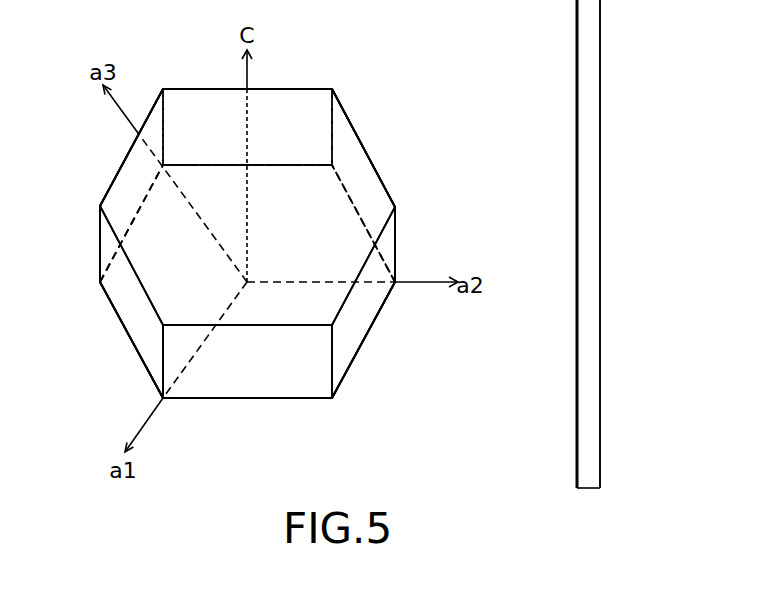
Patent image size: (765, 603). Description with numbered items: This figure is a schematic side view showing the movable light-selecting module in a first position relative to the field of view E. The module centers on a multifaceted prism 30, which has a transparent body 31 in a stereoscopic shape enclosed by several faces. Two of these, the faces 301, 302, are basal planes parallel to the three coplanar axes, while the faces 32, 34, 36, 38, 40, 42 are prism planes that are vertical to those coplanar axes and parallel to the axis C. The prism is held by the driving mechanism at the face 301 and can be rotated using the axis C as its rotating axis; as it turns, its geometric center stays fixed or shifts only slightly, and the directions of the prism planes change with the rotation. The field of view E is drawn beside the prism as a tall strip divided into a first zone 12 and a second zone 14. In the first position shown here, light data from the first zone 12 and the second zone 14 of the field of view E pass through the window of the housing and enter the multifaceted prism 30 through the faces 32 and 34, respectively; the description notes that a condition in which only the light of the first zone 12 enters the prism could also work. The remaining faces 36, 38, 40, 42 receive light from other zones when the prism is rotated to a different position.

The multifaceted prism 30 is at (318, 68).
The transparent body 31 is at (294, 239).
The face 32 is at (370, 158).
The face 34 is at (363, 307).
The face 36 is at (223, 388).
The face 38 is at (127, 307).
The face 40 is at (118, 170).
The face 42 is at (203, 87).
The face 301 is at (165, 242).
The face 302 is at (287, 403).
The first zone 12 is at (566, 0).
The second zone 14 is at (566, 240).
The field of view E is at (588, 325).